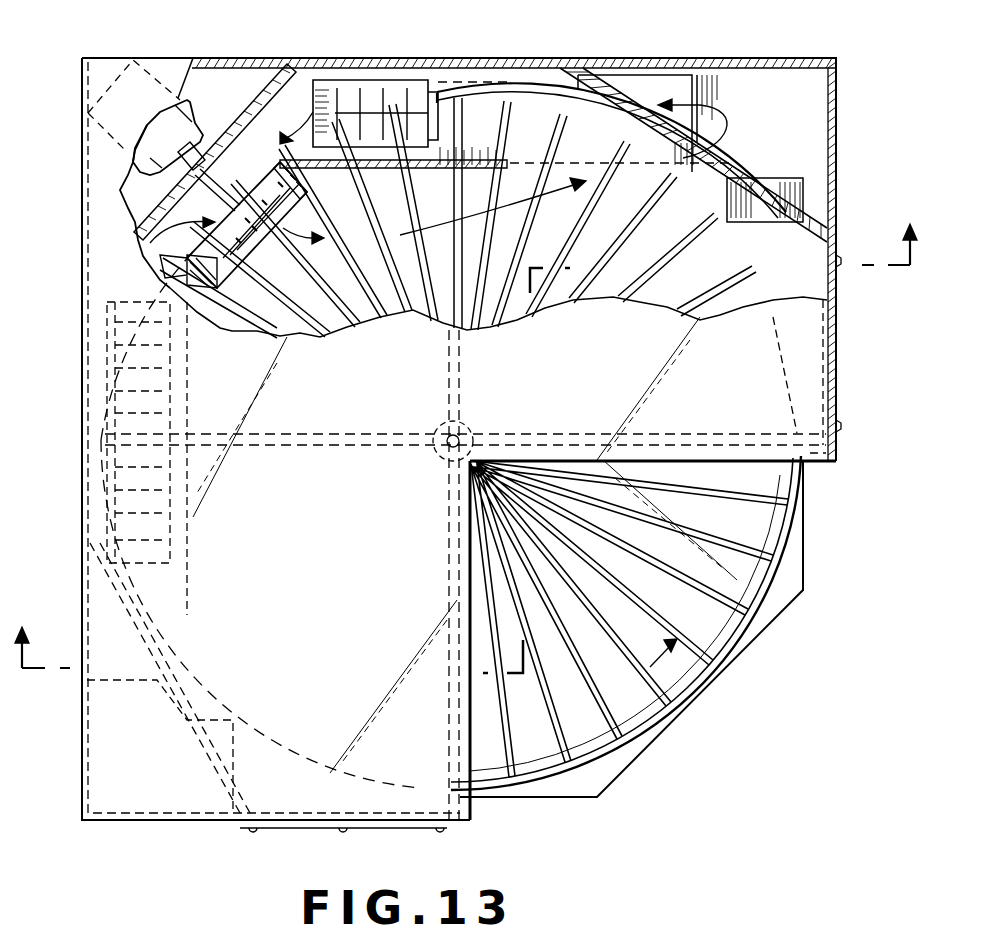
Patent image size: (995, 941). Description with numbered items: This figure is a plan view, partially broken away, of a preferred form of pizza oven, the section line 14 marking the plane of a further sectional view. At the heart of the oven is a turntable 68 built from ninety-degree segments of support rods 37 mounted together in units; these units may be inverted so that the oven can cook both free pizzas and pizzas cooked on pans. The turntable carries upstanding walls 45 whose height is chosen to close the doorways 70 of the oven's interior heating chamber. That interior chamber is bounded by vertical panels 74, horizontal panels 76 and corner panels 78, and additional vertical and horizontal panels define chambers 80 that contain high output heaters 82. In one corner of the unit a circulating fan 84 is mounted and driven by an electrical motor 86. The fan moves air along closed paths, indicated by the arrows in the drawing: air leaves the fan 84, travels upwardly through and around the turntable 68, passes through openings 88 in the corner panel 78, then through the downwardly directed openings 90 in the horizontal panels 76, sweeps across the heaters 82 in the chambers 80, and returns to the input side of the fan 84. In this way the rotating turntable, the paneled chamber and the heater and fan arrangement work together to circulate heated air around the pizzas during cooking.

The section line 14- 14 is at (469, 430).
The support rods 37 is at (690, 635).
The upstanding walls 45 is at (444, 418).
The turntable 68 is at (645, 740).
The doorways 70 is at (698, 443).
The vertical panels 74 is at (396, 58).
The horizontal panels 76 is at (250, 258).
The corner panels 78 is at (605, 88).
The chambers 80 is at (390, 150).
The high output heaters 82 is at (175, 547).
The circulating fan 84 is at (233, 215).
The electrical motor 86 is at (183, 123).
The openings 88 is at (640, 198).
The downwardly directed openings 90 is at (663, 81).